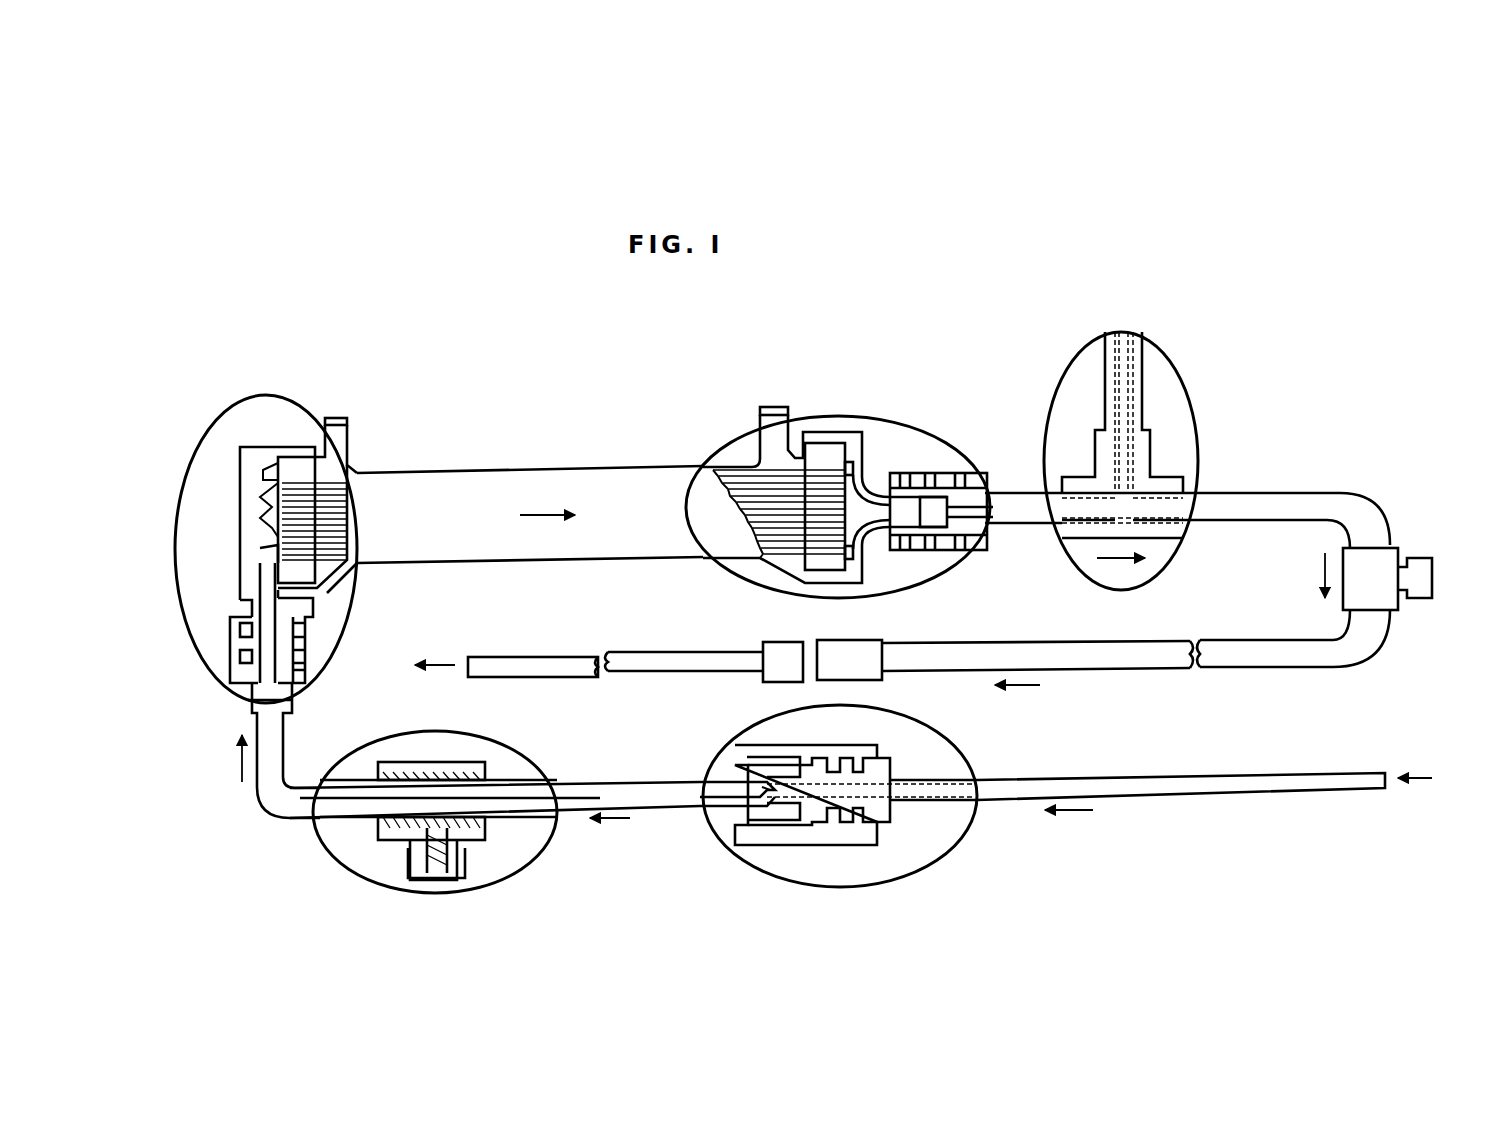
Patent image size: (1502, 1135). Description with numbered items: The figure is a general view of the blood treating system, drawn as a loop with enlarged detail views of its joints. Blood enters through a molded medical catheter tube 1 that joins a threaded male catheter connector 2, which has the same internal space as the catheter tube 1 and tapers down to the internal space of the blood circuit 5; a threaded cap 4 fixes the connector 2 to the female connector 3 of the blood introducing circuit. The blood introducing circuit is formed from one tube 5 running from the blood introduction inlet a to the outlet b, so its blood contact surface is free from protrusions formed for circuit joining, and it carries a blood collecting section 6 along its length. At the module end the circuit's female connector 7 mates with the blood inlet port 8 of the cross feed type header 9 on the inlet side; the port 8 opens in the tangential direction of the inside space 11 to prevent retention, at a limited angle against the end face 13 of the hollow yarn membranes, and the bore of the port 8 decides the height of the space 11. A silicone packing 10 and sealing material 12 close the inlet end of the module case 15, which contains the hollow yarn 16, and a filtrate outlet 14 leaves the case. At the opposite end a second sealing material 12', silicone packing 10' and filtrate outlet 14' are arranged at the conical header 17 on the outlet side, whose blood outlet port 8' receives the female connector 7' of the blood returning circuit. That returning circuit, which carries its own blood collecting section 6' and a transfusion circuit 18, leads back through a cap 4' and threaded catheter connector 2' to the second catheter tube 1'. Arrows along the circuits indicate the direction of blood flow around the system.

The catheter tube 1 is at (1181, 808).
The catheter tube 1' is at (533, 639).
The threaded catheter connector 2 is at (875, 835).
The threaded catheter connector 2' is at (758, 640).
The connector 3 is at (753, 818).
The cap for fixing the threaded connector 4 is at (806, 838).
The cap for fixing the threaded connector 4' is at (880, 639).
The blood circuit 5 is at (1320, 667).
The blood collecting section 6 is at (438, 841).
The blood collecting section 6' is at (1407, 580).
The connector 7 is at (225, 639).
The connector 7' is at (947, 481).
The blood inlet port 8 is at (217, 625).
The blood outlet port 8' is at (976, 460).
The header on inlet side 9 is at (250, 461).
The silicone packing 10 is at (240, 414).
The silicone packing 10' is at (893, 461).
The inside space 11 is at (256, 497).
The sealing material 12 is at (298, 462).
The sealing material 12' is at (779, 451).
The end face of hollow yarn membranes 13 is at (274, 538).
The filtrate outlet 14 is at (353, 396).
The filtrate outlet 14' is at (771, 373).
The module case 15 is at (480, 470).
The hollow yarn 16 is at (339, 478).
The header on outlet side 17 is at (855, 440).
The transfusion circuit 18 is at (1145, 398).
The inlet of blood circuit a is at (760, 786).
The outlet of blood circuit b is at (258, 684).